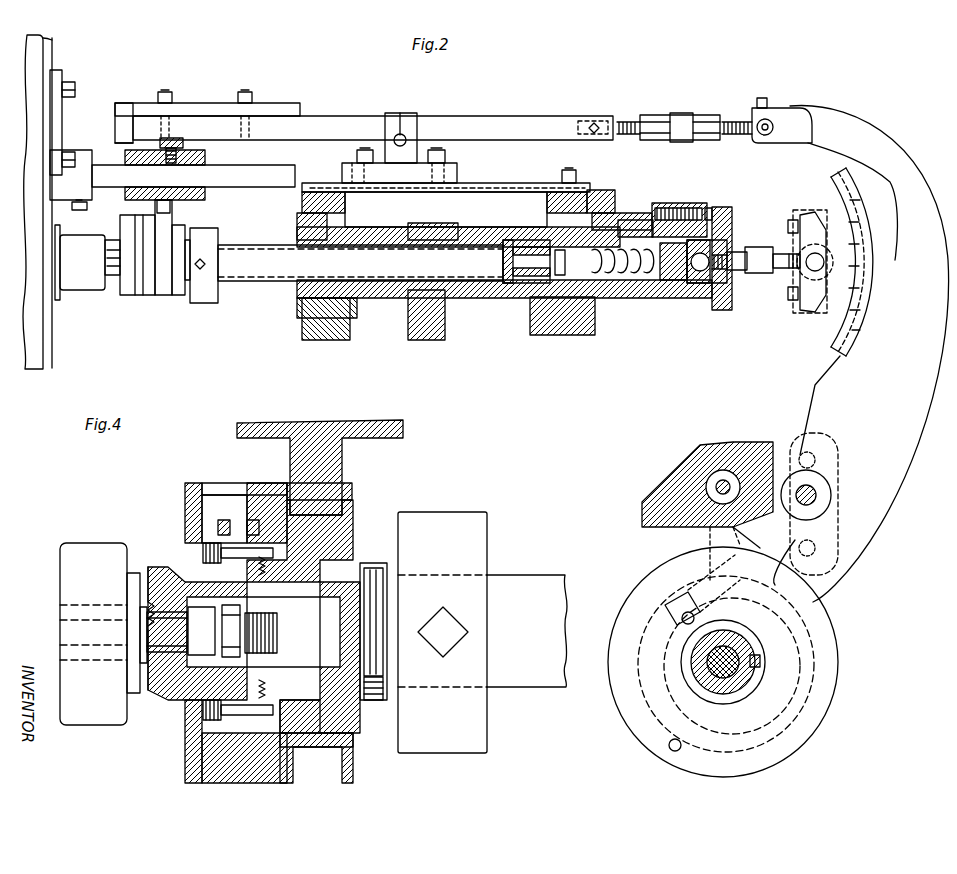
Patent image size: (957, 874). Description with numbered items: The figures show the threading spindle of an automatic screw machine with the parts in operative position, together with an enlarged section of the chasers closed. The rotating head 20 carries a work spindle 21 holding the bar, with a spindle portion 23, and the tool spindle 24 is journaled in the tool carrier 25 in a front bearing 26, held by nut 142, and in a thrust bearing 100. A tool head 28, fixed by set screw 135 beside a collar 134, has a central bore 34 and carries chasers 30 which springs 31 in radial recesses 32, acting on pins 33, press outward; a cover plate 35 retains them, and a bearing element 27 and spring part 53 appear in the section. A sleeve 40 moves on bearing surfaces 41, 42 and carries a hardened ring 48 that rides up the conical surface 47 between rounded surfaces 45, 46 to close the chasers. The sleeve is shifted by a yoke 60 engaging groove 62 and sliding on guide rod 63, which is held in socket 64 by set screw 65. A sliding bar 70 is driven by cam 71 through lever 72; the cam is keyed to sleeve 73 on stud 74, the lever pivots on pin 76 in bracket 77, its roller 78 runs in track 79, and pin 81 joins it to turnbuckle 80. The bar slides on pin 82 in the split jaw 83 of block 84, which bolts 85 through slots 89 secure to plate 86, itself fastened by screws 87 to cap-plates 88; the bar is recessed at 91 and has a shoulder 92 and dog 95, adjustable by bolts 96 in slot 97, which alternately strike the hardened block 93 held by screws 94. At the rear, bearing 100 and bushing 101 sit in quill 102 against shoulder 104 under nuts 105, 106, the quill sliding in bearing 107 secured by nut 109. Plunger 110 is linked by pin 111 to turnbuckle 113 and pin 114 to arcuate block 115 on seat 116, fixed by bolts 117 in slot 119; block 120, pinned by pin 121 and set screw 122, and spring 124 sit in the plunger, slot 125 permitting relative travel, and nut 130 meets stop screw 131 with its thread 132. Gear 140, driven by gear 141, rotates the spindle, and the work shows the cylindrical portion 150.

In FIG. 2, the rotating head 20 is at (37, 352).
In FIG. 2, the work spindle 21 is at (80, 292).
In FIG. 4, the work spindle 21 is at (106, 712).
In FIG. 4, the wheel shaft 23 is at (163, 612).
In FIG. 2, the tool spindle 24 is at (270, 290).
In FIG. 4, the tool spindle 24 is at (545, 680).
In FIG. 2, the tool carrier 25 is at (315, 320).
In FIG. 2, the front spindle box or bearing 26 is at (295, 300).
In FIG. 4, the bearing 27 is at (368, 565).
In FIG. 4, the tool head 28 is at (362, 700).
In FIG. 2, the chasers 30 is at (110, 278).
In FIG. 4, the chasers 30 is at (155, 690).
In FIG. 4, the coil springs 31 is at (275, 580).
In FIG. 4, the radial recesses 32 is at (302, 745).
In FIG. 4, the pins 33 is at (260, 545).
In FIG. 4, the central bore 34 is at (274, 633).
In FIG. 2, the cover plate 35 is at (128, 300).
In FIG. 4, the cover plate 35 is at (190, 757).
In FIG. 2, the sleeve or actuating member 40 is at (183, 275).
In FIG. 4, the sleeve or actuating member 40 is at (353, 500).
In FIG. 4, the cylindrical bearing surface 41 is at (340, 720).
In FIG. 4, the cylindrical bearing surface 42 is at (274, 495).
In FIG. 4, the rounded surface 45 is at (187, 520).
In FIG. 4, the rounded surface 46 is at (250, 520).
In FIG. 4, the conical surface 47 is at (228, 520).
In FIG. 4, the hardened ring 48 is at (218, 500).
In FIG. 4, the spring 53 is at (272, 552).
In FIG. 2, the yoke member 60 is at (204, 200).
In FIG. 4, the yoke member 60 is at (342, 470).
In FIG. 2, the groove 62 is at (160, 297).
In FIG. 4, the groove 62 is at (335, 765).
In FIG. 2, the guide rod 63 is at (265, 184).
In FIG. 2, the socket 64 is at (78, 152).
In FIG. 2, the set screw 65 is at (90, 207).
In FIG. 2, the sliding bar 70 is at (532, 130).
In FIG. 2, the cam 71 is at (795, 752).
In FIG. 2, the lever 72 is at (935, 420).
In FIG. 2, the sleeve 73 is at (745, 680).
In FIG. 2, the stud 74 is at (745, 650).
In FIG. 2, the pin 76 is at (815, 492).
In FIG. 2, the bracket 77 is at (715, 452).
In FIG. 2, the roller 78 is at (672, 620).
In FIG. 2, the track 79 is at (672, 752).
In FIG. 2, the turnbuckle 80 is at (680, 114).
In FIG. 2, the pin 81 is at (770, 122).
In FIG. 2, the pin 82 is at (445, 142).
In FIG. 2, the split clamping jaw 83 is at (417, 114).
In FIG. 2, the block 84 is at (365, 152).
In FIG. 2, the bolts 85 is at (450, 155).
In FIG. 2, the plate 86 is at (518, 183).
In FIG. 2, the screws 87 is at (575, 176).
In FIG. 2, the cap-plates 88 is at (596, 200).
In FIG. 2, the elongated slots 89 is at (380, 115).
In FIG. 2, the recess 91 is at (430, 140).
In FIG. 2, the shoulder 92 is at (185, 138).
In FIG. 2, the hardened block 93 is at (162, 142).
In FIG. 2, the screws 94 is at (203, 158).
In FIG. 2, the hooked member or dog 95 is at (203, 108).
In FIG. 2, the bolts 96 is at (260, 83).
In FIG. 2, the elongated slot 97 is at (280, 112).
In FIG. 2, the thrust bearing 100 is at (512, 285).
In FIG. 2, the bushing 101 is at (518, 310).
In FIG. 2, the sleeve or quill 102 is at (640, 300).
In FIG. 2, the shoulder 104 is at (500, 262).
In FIG. 2, the nut 105 is at (545, 300).
In FIG. 2, the nut 106 is at (565, 300).
In FIG. 2, the bearing 107 is at (665, 300).
In FIG. 2, the nut 109 is at (518, 228).
In FIG. 2, the bushing or plunger 110 is at (672, 285).
In FIG. 2, the pin 111 is at (712, 245).
In FIG. 2, the turnbuckle 113 is at (762, 275).
In FIG. 2, the pin 114 is at (812, 258).
In FIG. 2, the arcuate block 115 is at (838, 310).
In FIG. 2, the concave seat 116 is at (840, 340).
In FIG. 2, the bolts 117 is at (800, 222).
In FIG. 2, the arcuate slot 119 is at (840, 354).
In FIG. 2, the block 120 is at (625, 228).
In FIG. 2, the pin 121 is at (590, 300).
In FIG. 2, the set screw 122 is at (615, 290).
In FIG. 2, the coil spring 124 is at (660, 210).
In FIG. 2, the slot 125 is at (572, 300).
In FIG. 2, the nut 130 is at (730, 305).
In FIG. 2, the stop screw 131 is at (712, 210).
In FIG. 2, the thread 132 is at (690, 205).
In FIG. 2, the collar 134 is at (210, 290).
In FIG. 4, the collar 134 is at (461, 745).
In FIG. 2, the set screw 135 is at (208, 262).
In FIG. 4, the set screw 135 is at (460, 632).
In FIG. 2, the gear 140 is at (432, 236).
In FIG. 2, the gear 141 is at (428, 342).
In FIG. 2, the nut 142 is at (348, 319).
In FIG. 4, the cylindrical portion 150 is at (200, 655).